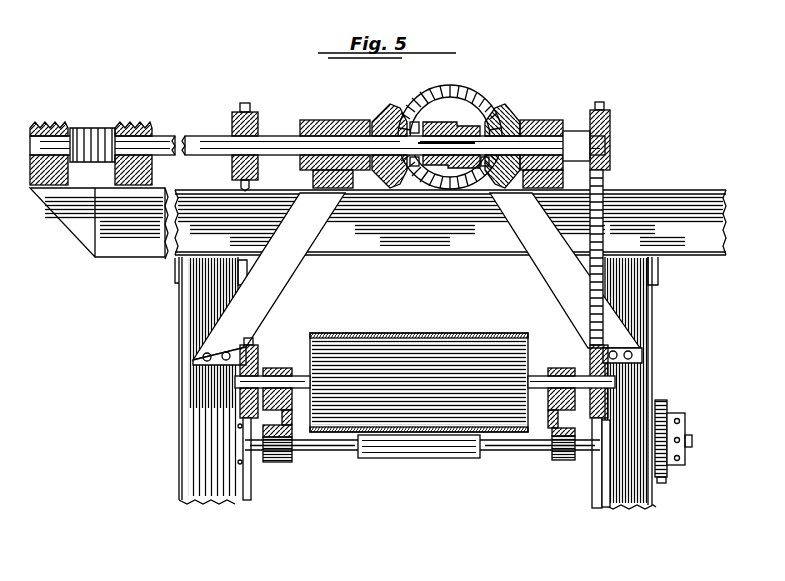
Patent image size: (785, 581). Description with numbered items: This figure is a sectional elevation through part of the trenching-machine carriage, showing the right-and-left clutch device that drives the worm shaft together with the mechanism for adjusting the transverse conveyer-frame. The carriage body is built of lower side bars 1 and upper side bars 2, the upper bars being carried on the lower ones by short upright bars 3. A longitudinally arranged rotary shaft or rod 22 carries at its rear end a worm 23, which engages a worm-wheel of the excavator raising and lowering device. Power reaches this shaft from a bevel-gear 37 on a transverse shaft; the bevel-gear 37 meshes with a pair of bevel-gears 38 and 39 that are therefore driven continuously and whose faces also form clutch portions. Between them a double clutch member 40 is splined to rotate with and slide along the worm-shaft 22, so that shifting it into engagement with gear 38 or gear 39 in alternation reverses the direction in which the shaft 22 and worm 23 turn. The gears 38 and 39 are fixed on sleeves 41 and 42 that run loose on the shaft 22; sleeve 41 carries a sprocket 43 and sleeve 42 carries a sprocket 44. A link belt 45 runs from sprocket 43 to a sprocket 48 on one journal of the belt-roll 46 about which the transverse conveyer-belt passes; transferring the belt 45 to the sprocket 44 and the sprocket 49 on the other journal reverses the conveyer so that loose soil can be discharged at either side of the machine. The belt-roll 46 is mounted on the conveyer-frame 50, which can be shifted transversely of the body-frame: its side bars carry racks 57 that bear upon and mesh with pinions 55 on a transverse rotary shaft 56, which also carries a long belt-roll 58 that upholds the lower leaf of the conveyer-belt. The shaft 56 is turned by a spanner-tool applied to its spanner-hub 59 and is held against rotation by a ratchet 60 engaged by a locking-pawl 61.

The lower side bars 1 is at (438, 333).
The upper side bars 2 is at (378, 223).
The upright bars 3 is at (180, 335).
The rotary worm-shaft 22 is at (206, 135).
The worm 23 is at (92, 128).
The bevel-gear 37 is at (472, 104).
The bevel-gear 38 is at (512, 118).
The bevel-gear 39 is at (386, 108).
The double clutch member 40 is at (440, 121).
The sleeve 41 is at (575, 128).
The sleeve 42 is at (300, 120).
The sprocket 43 is at (610, 113).
The sprocket 44 is at (238, 104).
The link belt 45 is at (608, 186).
The belt-roll 46 is at (425, 381).
The sprocket 48 is at (590, 356).
The sprocket 49 is at (258, 352).
The conveyer-frame 50 is at (282, 366).
The pinions 55 is at (280, 464).
The rotary shaft 56 is at (505, 452).
The racks 57 is at (292, 432).
The belt-roll 58 is at (416, 460).
The spanner-hub 59 is at (688, 416).
The ratchet 60 is at (662, 482).
The locking-pawl 61 is at (668, 406).